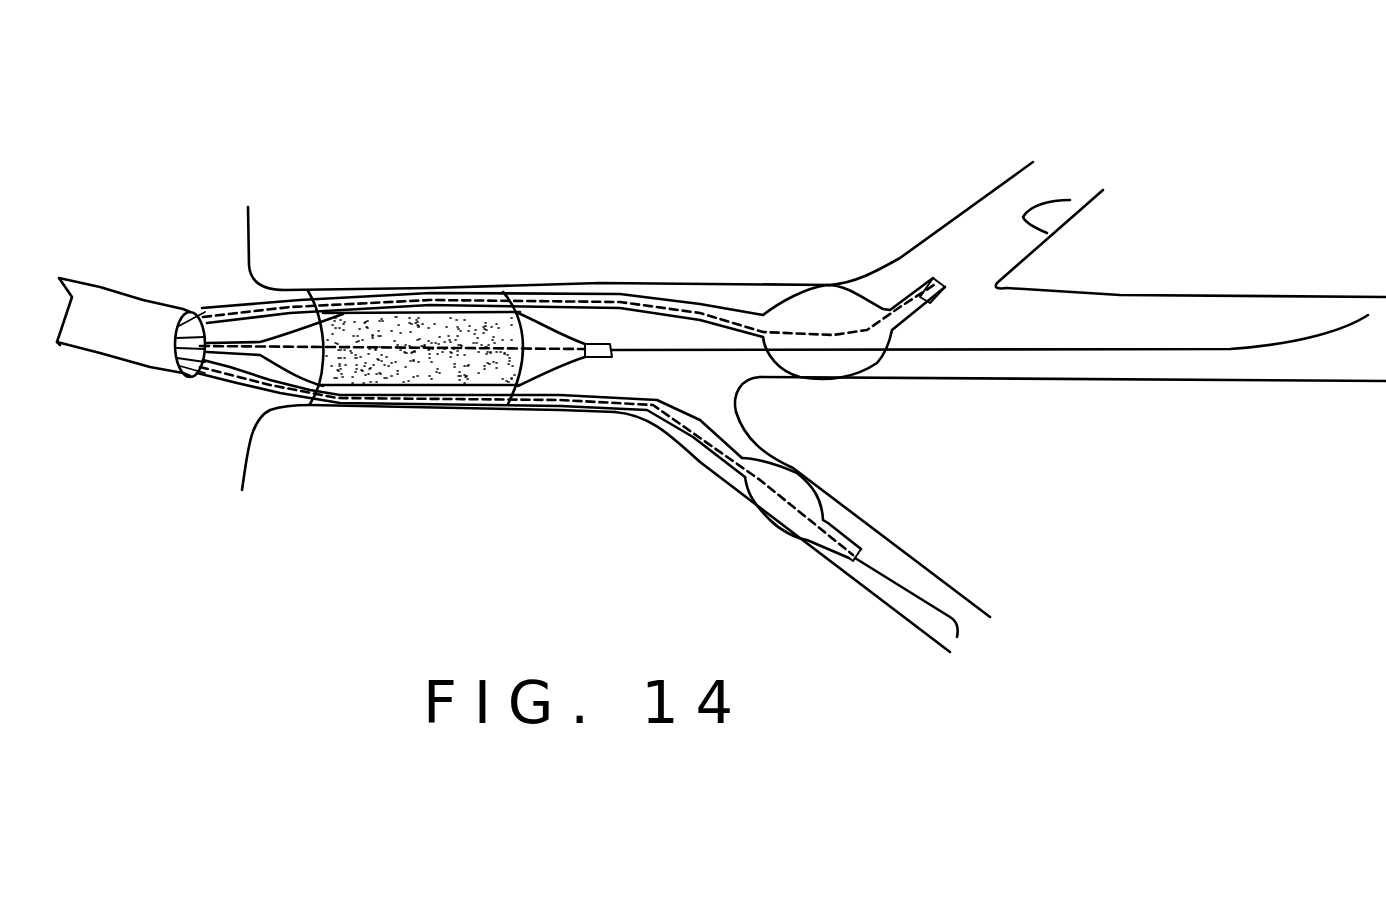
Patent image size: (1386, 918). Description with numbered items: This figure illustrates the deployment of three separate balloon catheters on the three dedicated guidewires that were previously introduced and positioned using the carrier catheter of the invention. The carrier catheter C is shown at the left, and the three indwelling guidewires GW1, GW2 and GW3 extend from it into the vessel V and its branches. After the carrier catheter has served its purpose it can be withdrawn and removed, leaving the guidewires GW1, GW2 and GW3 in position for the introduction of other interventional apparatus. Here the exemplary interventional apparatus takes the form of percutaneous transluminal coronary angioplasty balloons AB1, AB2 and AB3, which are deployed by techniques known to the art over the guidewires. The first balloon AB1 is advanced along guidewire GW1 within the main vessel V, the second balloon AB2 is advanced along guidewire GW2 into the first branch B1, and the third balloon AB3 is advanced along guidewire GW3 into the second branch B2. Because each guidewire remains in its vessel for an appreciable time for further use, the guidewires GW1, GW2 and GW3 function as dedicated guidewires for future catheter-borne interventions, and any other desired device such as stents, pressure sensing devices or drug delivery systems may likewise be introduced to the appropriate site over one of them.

The catheter C is at (148, 303).
The vessel V is at (730, 293).
The first branch vessel B1 is at (997, 205).
The second branch vessel B2 is at (907, 570).
The percutaneous transluminal coronary angioplasty balloon AB1 is at (532, 338).
The percutaneous transluminal coronary angioplasty balloon AB2 is at (820, 310).
The percutaneous transluminal coronary angioplasty balloon AB3 is at (800, 490).
The guidewire GW1 is at (1220, 337).
The guidewire GW2 is at (1047, 233).
The guidewire GW3 is at (880, 573).